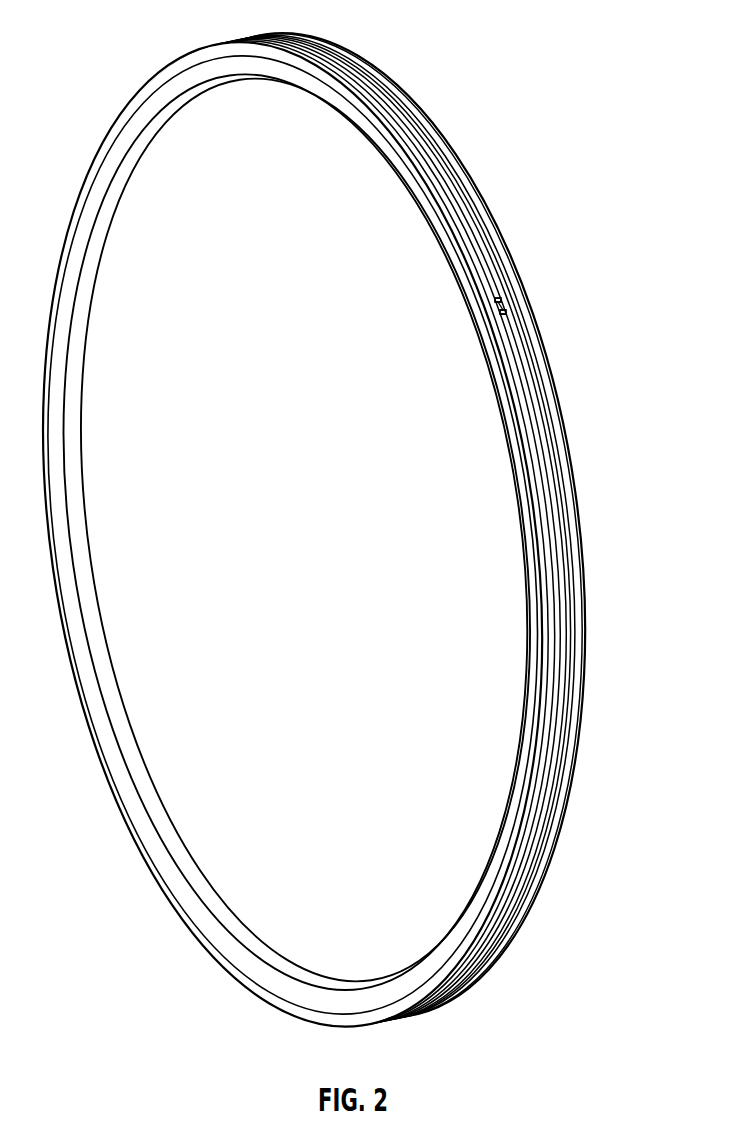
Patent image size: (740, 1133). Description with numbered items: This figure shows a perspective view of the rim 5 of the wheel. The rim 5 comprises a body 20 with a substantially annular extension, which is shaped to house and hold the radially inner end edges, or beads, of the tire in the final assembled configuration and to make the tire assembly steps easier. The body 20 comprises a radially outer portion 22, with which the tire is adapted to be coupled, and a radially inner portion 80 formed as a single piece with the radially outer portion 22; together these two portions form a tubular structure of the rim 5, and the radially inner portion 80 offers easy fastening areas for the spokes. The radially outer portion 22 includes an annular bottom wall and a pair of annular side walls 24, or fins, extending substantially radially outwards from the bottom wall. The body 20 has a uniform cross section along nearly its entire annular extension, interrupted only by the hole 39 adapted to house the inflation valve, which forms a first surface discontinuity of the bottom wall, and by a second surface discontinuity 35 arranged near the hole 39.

The rim 5 is at (98, 102).
The body 20 is at (453, 133).
The radially outer portion 22 is at (548, 463).
The annular side walls 24 is at (455, 236).
The second surface discontinuity 35 is at (540, 294).
The hole 39 is at (507, 313).
The radially inner portion 80 is at (517, 729).